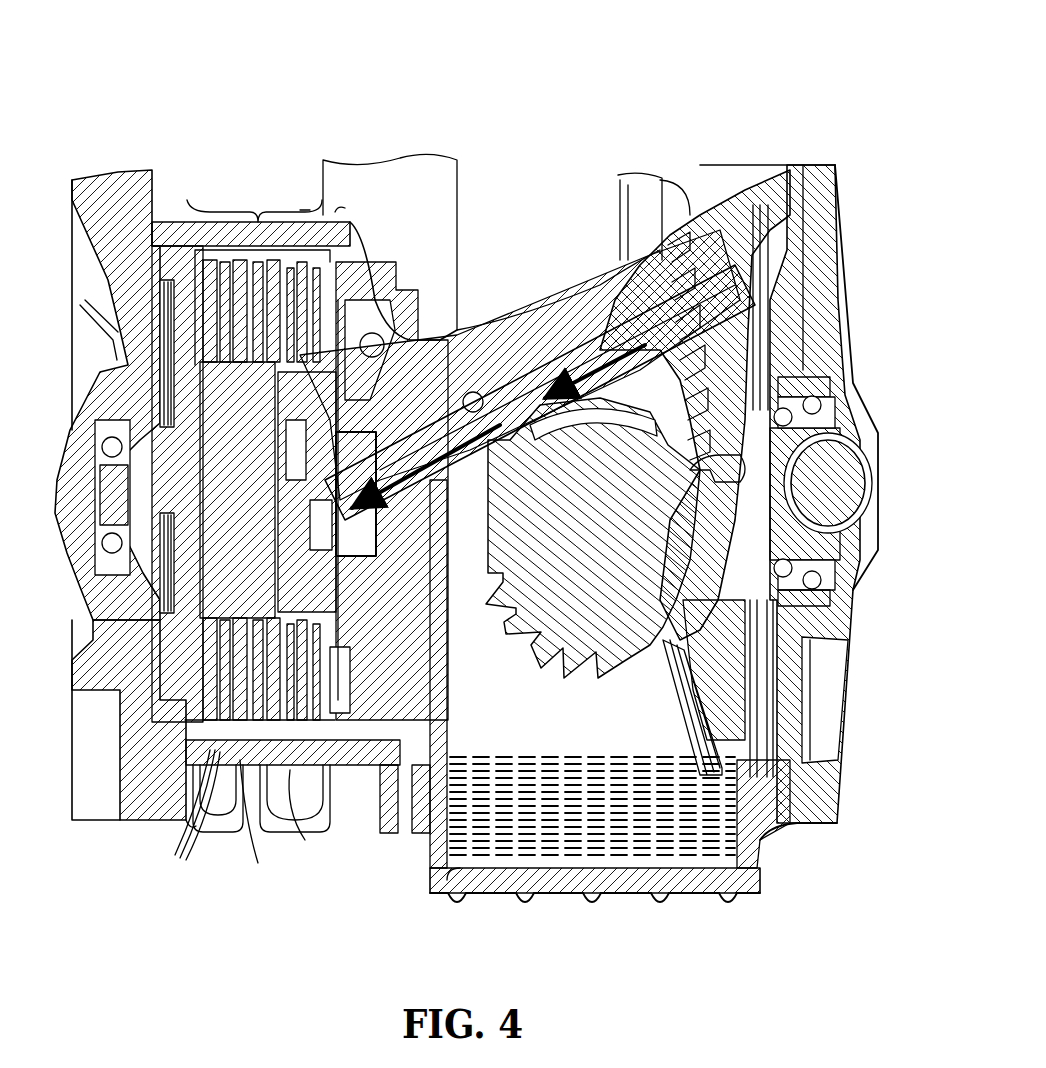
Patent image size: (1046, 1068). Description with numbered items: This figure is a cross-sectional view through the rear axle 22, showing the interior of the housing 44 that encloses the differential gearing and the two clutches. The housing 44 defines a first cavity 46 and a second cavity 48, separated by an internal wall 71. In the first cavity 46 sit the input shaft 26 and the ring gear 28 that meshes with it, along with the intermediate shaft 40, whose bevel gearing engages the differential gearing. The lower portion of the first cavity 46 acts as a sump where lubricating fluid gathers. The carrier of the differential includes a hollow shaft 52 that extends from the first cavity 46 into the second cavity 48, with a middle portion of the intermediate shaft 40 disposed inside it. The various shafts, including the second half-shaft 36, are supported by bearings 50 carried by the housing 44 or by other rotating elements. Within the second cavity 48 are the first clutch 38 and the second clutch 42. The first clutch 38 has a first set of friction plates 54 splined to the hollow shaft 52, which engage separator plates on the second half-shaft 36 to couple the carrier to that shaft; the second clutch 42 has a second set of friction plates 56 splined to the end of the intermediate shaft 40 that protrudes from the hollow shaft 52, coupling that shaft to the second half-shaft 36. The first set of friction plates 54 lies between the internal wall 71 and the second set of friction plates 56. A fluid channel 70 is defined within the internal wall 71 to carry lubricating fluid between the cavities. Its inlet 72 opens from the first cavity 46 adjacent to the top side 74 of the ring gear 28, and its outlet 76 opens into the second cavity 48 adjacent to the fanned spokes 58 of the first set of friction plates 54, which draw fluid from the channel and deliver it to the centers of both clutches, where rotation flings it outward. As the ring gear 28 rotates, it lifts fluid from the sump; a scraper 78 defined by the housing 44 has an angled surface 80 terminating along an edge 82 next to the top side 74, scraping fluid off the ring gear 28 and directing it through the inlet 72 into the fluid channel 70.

The rear axle 22 is at (175, 82).
The input shaft 26 is at (812, 570).
The ring gear 28 is at (740, 720).
The second half-shaft 36 is at (158, 493).
The first clutch 38 is at (300, 168).
The intermediate shaft 40 is at (237, 392).
The second clutch 42 is at (230, 168).
The housing 44 is at (679, 140).
The first cavity 46 is at (593, 565).
The second cavity 48 is at (160, 728).
The bearings 50 is at (812, 385).
The hollow shaft 52 is at (355, 262).
The first set of friction plates 54 is at (292, 810).
The second set of friction plates 56 is at (258, 860).
The fanned spokes 58 is at (360, 590).
The fluid channel 70 is at (520, 400).
The internal wall 71 is at (432, 590).
The inlet 72 is at (665, 420).
The top side of the ring gear 74 is at (735, 268).
The outlet 76 is at (470, 390).
The scraper 78 is at (820, 395).
The angled surface 80 is at (637, 340).
The edge 82 is at (668, 480).